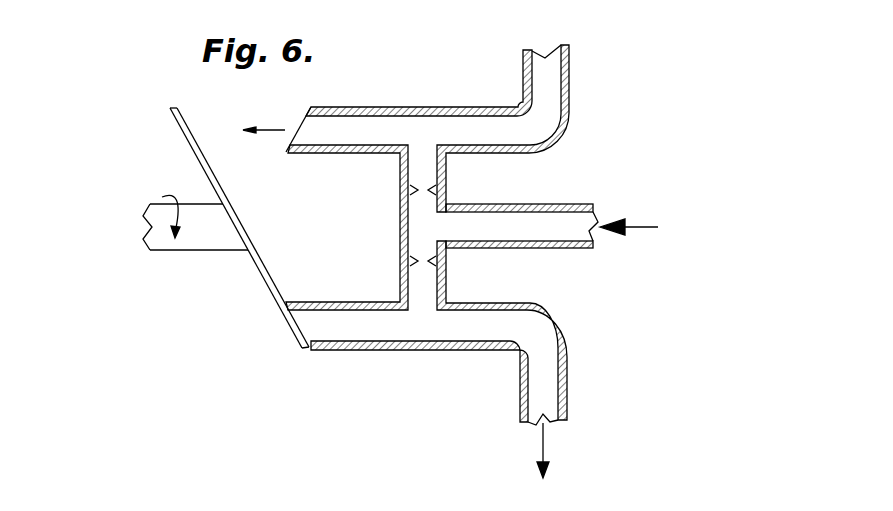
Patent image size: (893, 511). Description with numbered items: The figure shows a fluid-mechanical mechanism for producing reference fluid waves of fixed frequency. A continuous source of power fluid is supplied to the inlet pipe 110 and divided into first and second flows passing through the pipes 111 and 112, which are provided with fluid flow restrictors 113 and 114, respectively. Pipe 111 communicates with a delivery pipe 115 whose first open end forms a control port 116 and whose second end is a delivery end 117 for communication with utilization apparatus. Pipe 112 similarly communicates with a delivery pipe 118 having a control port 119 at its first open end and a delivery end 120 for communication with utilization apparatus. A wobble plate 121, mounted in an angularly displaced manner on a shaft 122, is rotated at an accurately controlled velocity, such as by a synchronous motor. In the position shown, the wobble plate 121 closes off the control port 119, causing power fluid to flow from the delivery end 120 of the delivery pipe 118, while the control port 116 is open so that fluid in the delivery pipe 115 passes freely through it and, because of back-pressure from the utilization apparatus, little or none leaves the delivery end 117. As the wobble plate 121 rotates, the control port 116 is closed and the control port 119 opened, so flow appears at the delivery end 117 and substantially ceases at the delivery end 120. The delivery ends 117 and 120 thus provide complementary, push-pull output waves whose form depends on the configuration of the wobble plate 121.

The inlet pipe 110 is at (575, 204).
The pipe 111 is at (444, 184).
The pipe 112 is at (444, 271).
The fluid flow restrictor 113 is at (410, 190).
The fluid flow restrictor 114 is at (410, 261).
The delivery pipe 115 is at (379, 107).
The control port 116 is at (301, 126).
The delivery end 117 is at (544, 48).
The delivery pipe 118 is at (438, 350).
The control port 119 is at (308, 349).
The delivery end 120 is at (552, 422).
The wobble plate 121 is at (184, 134).
The shaft 122 is at (202, 238).